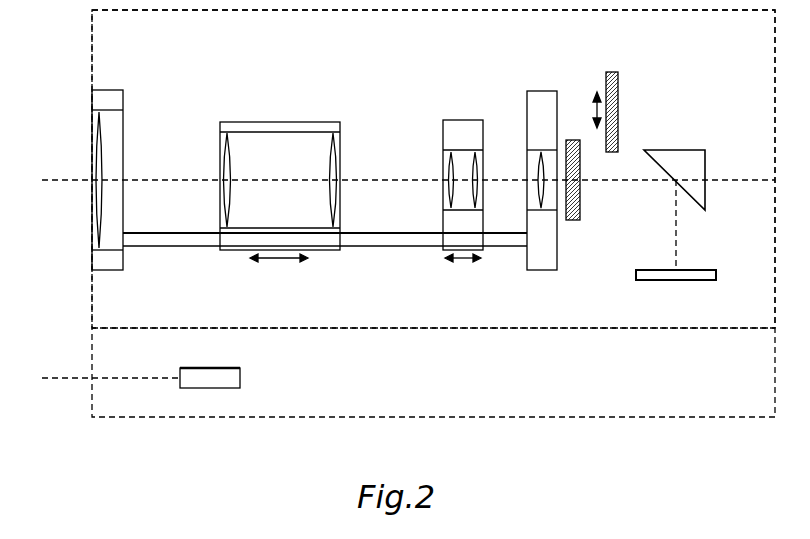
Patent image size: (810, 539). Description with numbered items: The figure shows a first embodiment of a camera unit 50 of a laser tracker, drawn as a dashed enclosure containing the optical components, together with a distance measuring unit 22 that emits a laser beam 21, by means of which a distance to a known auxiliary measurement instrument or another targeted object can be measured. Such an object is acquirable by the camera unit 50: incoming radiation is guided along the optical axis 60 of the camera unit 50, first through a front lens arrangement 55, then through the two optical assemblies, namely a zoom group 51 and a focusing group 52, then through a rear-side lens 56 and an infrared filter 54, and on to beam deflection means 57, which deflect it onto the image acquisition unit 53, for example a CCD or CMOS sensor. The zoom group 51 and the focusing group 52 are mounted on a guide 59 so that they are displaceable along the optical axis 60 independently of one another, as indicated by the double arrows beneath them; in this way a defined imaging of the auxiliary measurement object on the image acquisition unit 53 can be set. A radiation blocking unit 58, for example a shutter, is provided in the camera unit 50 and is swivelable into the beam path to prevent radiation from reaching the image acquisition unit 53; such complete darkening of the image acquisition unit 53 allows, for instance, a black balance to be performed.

The camera unit 50 is at (172, 50).
The zoom group 51 is at (280, 126).
The focusing group 52 is at (459, 130).
The image acquisition unit 53 is at (686, 277).
The infrared filter 54 is at (572, 222).
The front lens arrangement 55 is at (118, 100).
The rear-side lens 56 is at (543, 100).
The beam deflection means 57 is at (704, 152).
The radiation blocking unit 58 is at (612, 77).
The guide 59 is at (370, 236).
The optical axis 60 is at (63, 180).
The laser beam 21 is at (74, 378).
The distance measuring unit 22 is at (232, 372).